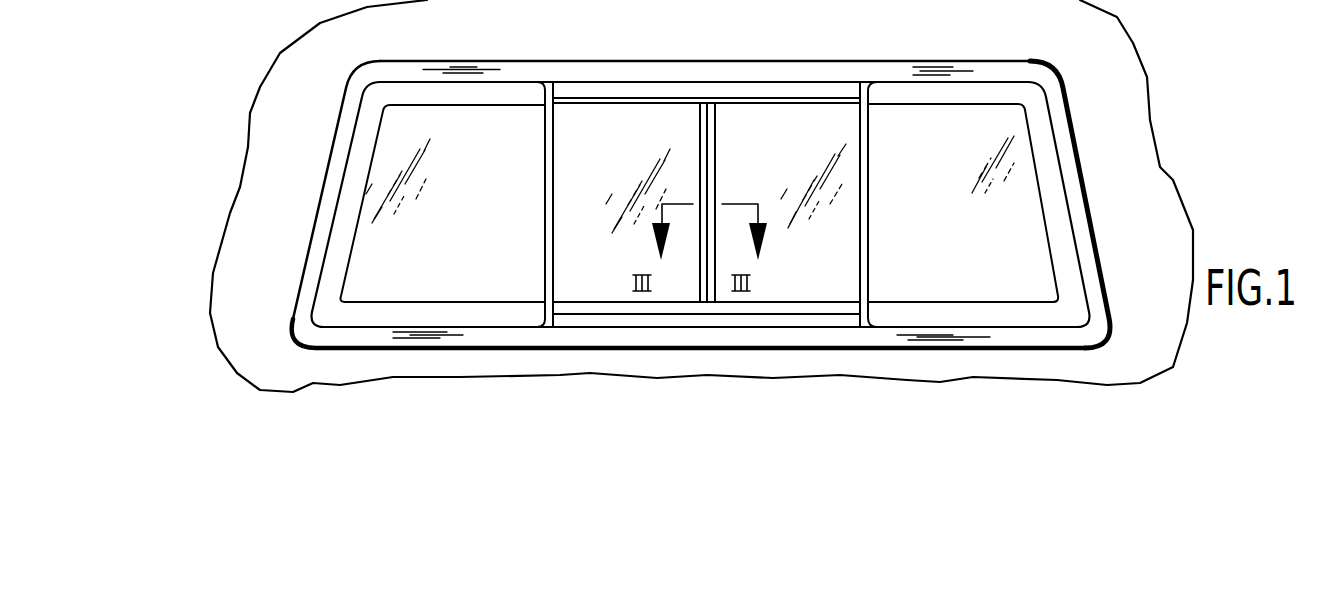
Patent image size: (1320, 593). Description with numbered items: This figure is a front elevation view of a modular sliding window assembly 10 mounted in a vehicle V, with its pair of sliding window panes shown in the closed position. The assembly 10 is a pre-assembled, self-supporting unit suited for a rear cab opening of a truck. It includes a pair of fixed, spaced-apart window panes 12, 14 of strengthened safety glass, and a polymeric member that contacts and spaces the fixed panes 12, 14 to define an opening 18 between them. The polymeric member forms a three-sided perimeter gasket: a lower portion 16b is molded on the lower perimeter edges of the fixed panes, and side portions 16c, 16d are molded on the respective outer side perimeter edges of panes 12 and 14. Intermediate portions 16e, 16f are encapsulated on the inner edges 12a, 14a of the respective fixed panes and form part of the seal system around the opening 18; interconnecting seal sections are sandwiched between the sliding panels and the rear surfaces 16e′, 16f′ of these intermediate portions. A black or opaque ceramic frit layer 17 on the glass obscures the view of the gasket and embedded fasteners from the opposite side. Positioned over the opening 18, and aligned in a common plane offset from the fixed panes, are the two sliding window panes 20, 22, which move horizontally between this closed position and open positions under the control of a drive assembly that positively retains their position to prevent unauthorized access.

The modular sliding window assembly 10 is at (390, 0).
The fixed window pane 12 is at (508, 100).
The inner edge of first fixed panel 12a is at (543, 192).
The fixed window pane 14 is at (891, 88).
The inner edge of second fixed panel 14a is at (862, 163).
The lower portion 16b is at (358, 346).
The side portion 16c is at (325, 180).
The side portion 16d is at (1068, 140).
The intermediate portion 16e is at (545, 250).
The rear surface 16e′ is at (558, 232).
The intermediate portion 16f is at (868, 206).
The rear surface 16f′ is at (862, 248).
The ceramic frit layer 17 is at (983, 92).
The opening 18 is at (597, 115).
The sliding window pane 20 is at (663, 115).
The sliding window pane 22 is at (778, 115).
The vehicle body V is at (225, 356).